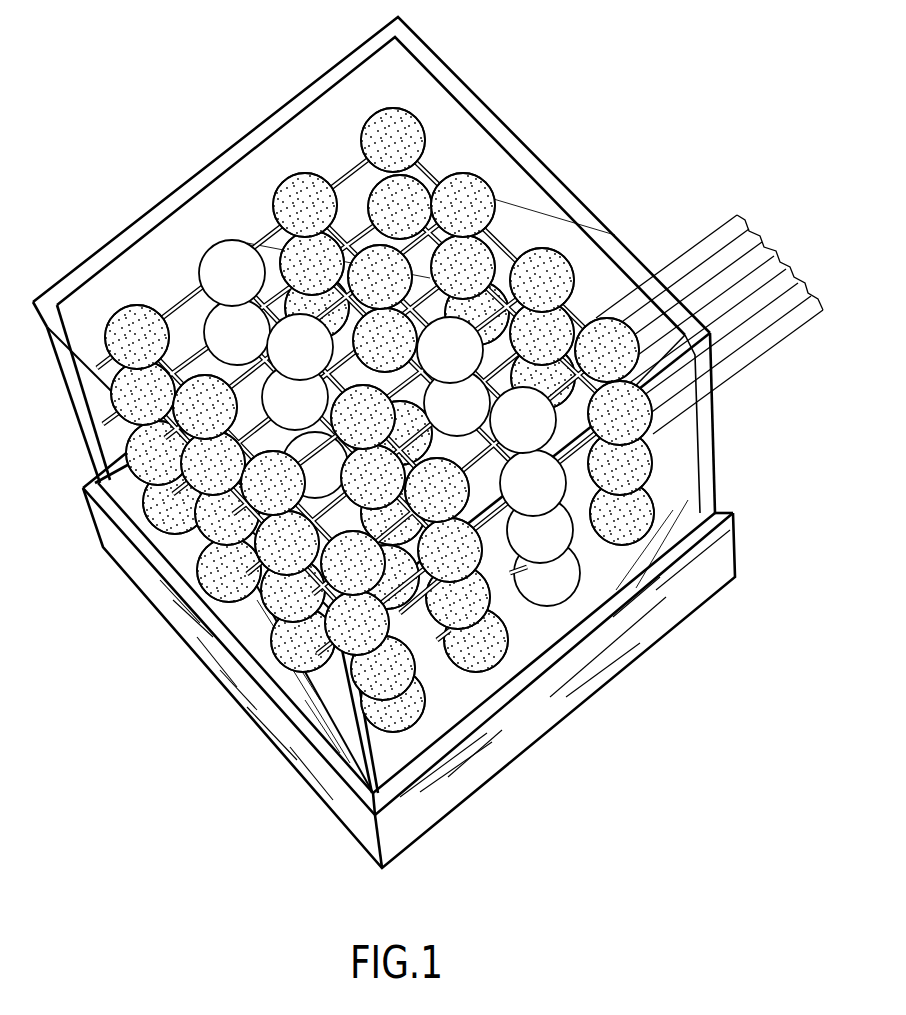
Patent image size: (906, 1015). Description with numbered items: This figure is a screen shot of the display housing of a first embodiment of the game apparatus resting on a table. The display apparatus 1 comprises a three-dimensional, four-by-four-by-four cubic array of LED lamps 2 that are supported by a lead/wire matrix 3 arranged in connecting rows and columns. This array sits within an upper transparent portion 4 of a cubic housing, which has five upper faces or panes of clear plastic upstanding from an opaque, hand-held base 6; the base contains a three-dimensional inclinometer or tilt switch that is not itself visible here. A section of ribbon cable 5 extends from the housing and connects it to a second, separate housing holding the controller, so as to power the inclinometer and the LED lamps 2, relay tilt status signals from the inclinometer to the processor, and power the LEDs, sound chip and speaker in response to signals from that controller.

The display apparatus 1 is at (415, 442).
The LED lamps 2 is at (400, 420).
The lead/wire matrix 3 is at (488, 283).
The upper transparent portion 4 is at (202, 237).
The ribbon cable 5 is at (773, 340).
The base 6 is at (208, 664).